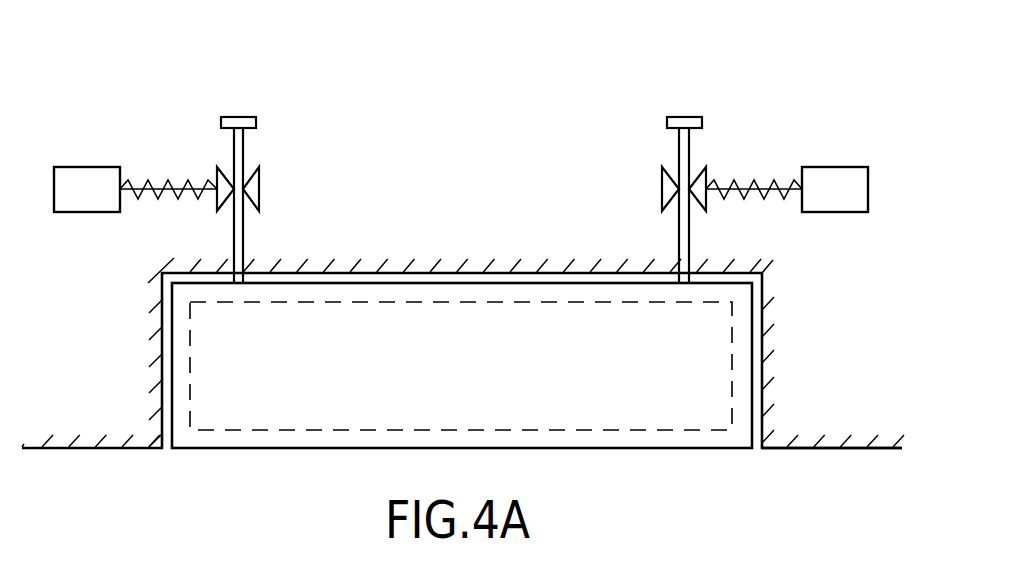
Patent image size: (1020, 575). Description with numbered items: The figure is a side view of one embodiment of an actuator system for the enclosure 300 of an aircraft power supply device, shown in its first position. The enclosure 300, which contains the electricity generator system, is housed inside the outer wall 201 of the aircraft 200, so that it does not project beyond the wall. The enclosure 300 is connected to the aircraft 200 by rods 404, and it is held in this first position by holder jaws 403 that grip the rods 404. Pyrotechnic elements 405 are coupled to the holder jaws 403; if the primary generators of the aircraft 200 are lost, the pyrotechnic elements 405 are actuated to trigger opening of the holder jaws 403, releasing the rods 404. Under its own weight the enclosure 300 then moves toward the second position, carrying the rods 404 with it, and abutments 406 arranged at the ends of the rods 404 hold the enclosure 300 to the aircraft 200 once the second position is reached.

The pyrotechnic elements 405 is at (88, 175).
The abutments 406 is at (238, 117).
The holder jaws 403 is at (222, 202).
The rods 404 is at (243, 232).
The enclosure 300 is at (258, 450).
The aircraft 200 is at (798, 403).
The outer wall 201 is at (827, 450).